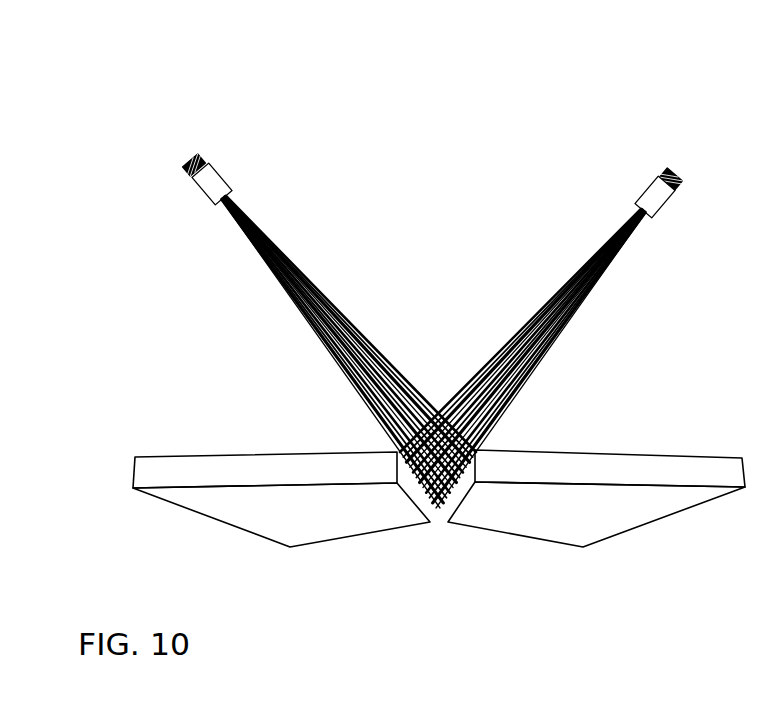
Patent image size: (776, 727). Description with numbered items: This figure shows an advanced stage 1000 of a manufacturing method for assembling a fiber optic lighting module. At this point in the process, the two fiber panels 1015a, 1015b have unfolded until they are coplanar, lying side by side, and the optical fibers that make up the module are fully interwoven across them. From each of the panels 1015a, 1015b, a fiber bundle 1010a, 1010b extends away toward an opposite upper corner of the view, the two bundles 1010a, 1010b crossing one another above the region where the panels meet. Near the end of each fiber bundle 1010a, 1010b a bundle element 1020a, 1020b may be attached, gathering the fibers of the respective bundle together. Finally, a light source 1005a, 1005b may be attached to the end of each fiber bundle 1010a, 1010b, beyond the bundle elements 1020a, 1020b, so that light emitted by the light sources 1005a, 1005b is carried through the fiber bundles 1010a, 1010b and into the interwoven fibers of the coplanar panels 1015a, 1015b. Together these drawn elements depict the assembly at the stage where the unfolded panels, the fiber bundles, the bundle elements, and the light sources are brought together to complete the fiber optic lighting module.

The optical system 1000 is at (446, 90).
The light source 1005a is at (200, 148).
The light source 1005b is at (666, 167).
The bundle element 1020a is at (232, 182).
The bundle element 1020b is at (646, 184).
The fiber bundle 1010a is at (317, 287).
The fiber bundle 1010b is at (565, 282).
The first reflector 1015a is at (256, 452).
The second reflector 1015b is at (633, 450).